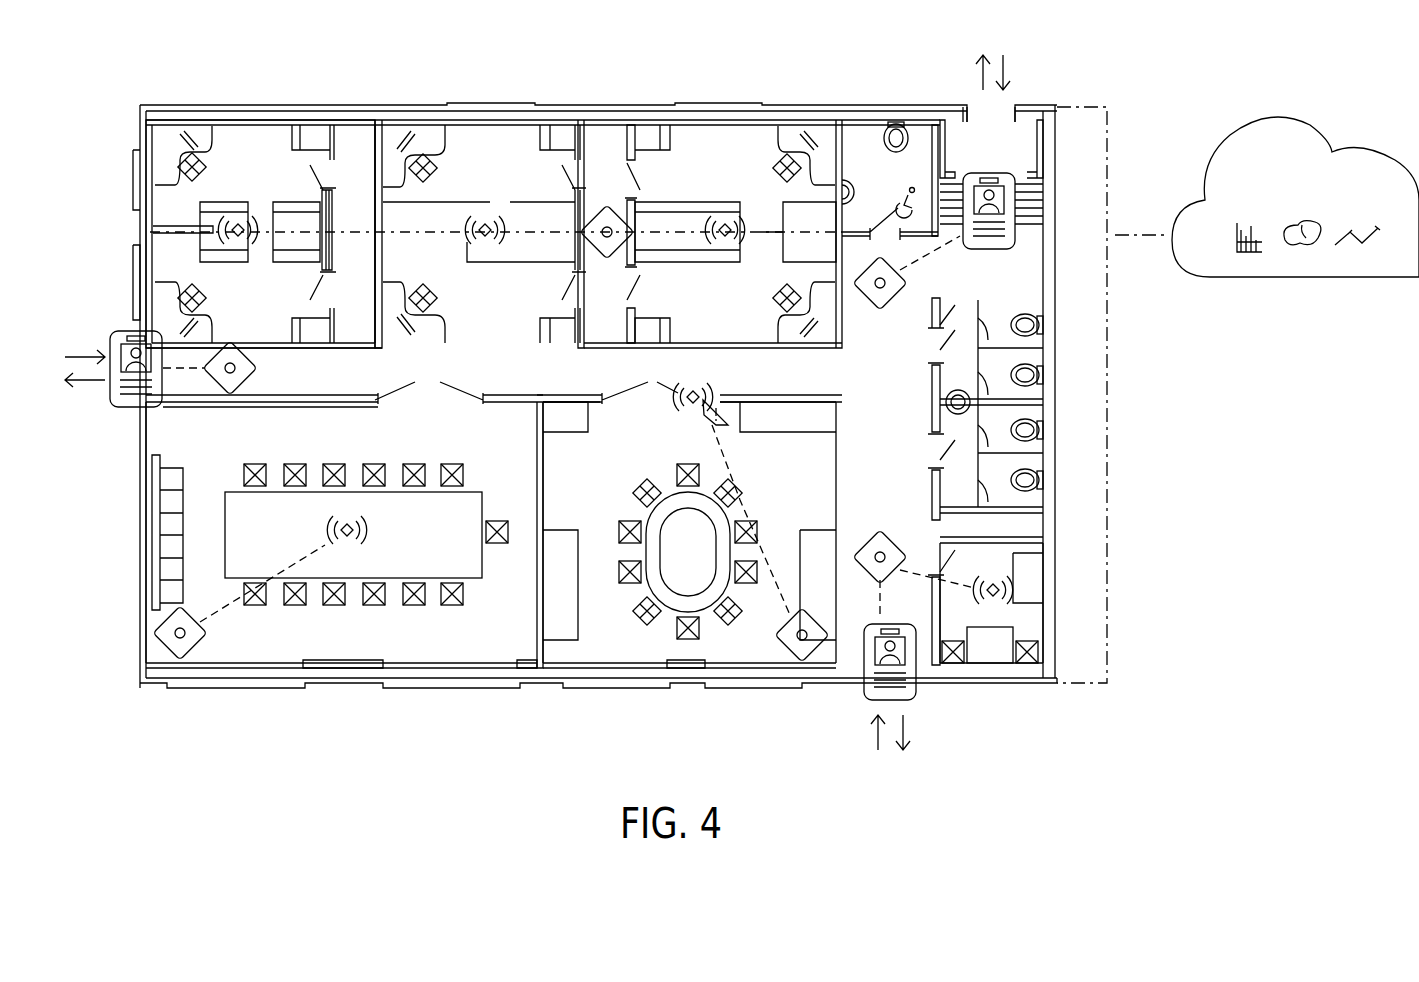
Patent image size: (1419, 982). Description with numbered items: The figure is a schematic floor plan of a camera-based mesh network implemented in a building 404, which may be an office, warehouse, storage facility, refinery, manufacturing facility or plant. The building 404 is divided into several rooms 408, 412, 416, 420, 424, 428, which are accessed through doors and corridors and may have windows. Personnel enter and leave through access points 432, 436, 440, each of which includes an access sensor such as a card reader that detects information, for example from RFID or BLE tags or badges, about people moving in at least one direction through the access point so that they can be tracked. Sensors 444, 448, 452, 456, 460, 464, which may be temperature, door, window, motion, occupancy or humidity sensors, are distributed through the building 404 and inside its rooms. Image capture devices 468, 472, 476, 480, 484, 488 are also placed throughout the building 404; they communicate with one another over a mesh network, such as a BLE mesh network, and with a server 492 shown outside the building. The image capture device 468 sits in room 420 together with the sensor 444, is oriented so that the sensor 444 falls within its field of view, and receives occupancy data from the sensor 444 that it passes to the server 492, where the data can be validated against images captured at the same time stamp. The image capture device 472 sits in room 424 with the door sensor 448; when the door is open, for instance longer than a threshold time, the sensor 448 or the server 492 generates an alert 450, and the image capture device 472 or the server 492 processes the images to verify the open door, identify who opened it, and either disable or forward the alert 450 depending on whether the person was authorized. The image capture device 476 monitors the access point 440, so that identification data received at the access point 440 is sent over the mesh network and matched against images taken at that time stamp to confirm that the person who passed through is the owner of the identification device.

The building 404 is at (346, 106).
The room 408 is at (165, 200).
The room 412 is at (526, 122).
The room 416 is at (722, 122).
The room 420 is at (247, 638).
The room 424 is at (593, 645).
The room 428 is at (985, 658).
The access point 432 is at (134, 408).
The access point 436 is at (975, 173).
The access point 440 is at (908, 702).
The sensor 444 is at (352, 545).
The sensor 448 is at (684, 405).
The alert 450 is at (714, 405).
The sensor 452 is at (1012, 586).
The sensor 456 is at (236, 218).
The sensor 460 is at (490, 218).
The sensor 464 is at (724, 218).
The image capture device 468 is at (186, 610).
The image capture device 472 is at (805, 668).
The image capture device 476 is at (877, 530).
The image capture device 480 is at (256, 382).
The image capture device 484 is at (606, 225).
The image capture device 488 is at (904, 286).
The server 492 is at (1342, 278).